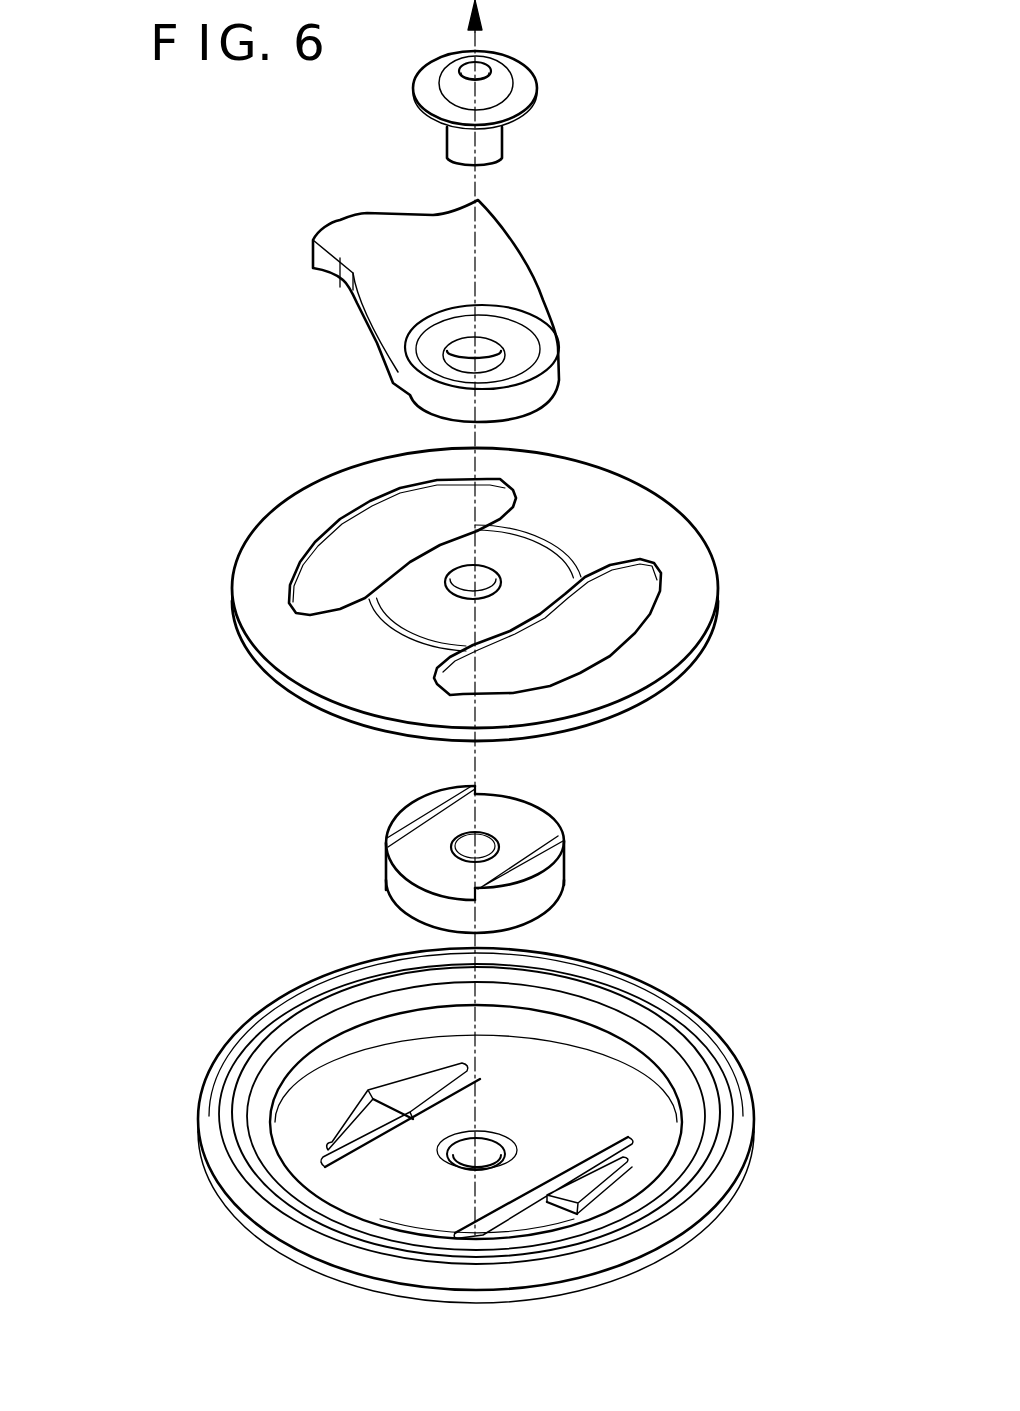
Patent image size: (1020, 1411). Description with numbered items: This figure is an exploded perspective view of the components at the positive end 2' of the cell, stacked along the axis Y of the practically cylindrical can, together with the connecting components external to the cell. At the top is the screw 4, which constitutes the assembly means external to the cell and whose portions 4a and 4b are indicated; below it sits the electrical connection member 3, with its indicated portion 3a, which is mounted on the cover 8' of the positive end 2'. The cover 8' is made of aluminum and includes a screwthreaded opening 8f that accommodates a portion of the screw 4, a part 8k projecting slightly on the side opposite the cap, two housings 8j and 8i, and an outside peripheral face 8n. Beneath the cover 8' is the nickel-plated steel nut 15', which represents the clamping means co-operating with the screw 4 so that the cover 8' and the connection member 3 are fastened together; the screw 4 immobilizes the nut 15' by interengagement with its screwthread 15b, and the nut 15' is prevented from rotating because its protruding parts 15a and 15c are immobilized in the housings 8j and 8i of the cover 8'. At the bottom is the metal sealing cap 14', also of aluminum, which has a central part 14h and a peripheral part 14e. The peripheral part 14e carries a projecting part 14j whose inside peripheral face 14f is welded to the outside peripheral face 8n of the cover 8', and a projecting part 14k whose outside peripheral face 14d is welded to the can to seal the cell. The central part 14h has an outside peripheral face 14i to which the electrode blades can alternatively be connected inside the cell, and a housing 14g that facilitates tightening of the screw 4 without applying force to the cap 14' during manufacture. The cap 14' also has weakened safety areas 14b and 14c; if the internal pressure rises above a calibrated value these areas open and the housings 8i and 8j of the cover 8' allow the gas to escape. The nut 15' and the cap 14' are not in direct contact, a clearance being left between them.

The axis Y is at (470, 38).
The screw 4 is at (484, 105).
The rivet head 4a is at (450, 83).
The rivet flange 4b is at (432, 88).
The electrical connection member 3 is at (481, 311).
The lever hole 3a is at (512, 344).
The cover 8' is at (510, 569).
The positive end 2' is at (807, 470).
The housing 8j is at (346, 512).
The screwthreaded opening 8f is at (492, 582).
The projecting part 8k is at (542, 570).
The housing 8i is at (632, 588).
The outside peripheral face 8n is at (633, 672).
The nut 15' is at (463, 841).
The protruding part 15a is at (424, 805).
The screwthread 15b is at (495, 836).
The protruding part 15c is at (527, 868).
The metal sealing cap 14' is at (431, 1118).
The projecting part 14k is at (250, 1020).
The central part 14h is at (417, 1053).
The inside peripheral face 14f is at (598, 997).
The peripheral part 14e is at (223, 1110).
The projecting part 14j is at (223, 1138).
The outside peripheral face 14d is at (240, 1198).
The outside peripheral face 14i is at (368, 1287).
The housing 14g is at (463, 1160).
The weakened safety area 14c is at (361, 1146).
The weakened safety area 14b is at (588, 1155).